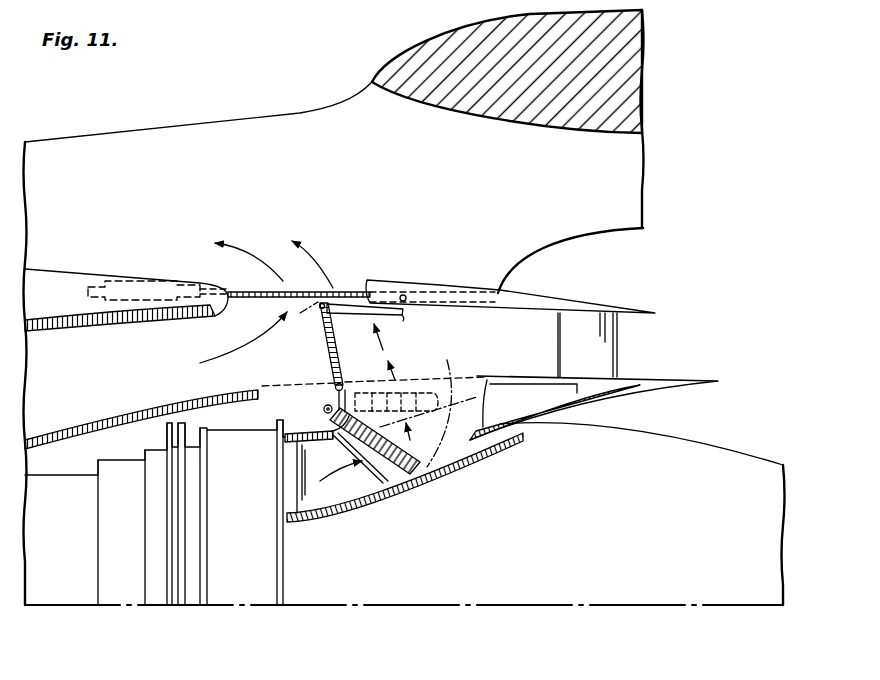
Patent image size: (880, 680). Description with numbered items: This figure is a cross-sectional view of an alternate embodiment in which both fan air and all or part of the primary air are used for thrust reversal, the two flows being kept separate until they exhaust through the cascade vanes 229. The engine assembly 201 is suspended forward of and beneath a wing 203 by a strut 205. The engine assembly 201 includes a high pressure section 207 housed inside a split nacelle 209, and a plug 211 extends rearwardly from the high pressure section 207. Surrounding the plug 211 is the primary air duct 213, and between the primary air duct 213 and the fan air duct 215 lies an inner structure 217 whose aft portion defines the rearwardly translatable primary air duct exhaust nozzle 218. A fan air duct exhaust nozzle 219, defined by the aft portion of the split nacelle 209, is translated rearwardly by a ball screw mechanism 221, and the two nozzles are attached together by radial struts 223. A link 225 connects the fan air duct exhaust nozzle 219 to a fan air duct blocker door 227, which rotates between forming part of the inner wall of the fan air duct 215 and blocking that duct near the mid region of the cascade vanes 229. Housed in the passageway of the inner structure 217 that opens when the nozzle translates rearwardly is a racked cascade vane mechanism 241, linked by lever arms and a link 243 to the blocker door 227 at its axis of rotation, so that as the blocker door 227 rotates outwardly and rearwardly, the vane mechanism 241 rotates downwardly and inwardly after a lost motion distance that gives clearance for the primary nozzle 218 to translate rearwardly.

The engine assembly 201 is at (567, 277).
The wing 203 is at (447, 48).
The strut 205 is at (226, 127).
The high pressure section 207 is at (192, 578).
The split nacelle 209 is at (83, 277).
The plug 211 is at (724, 455).
The primary air duct 213 is at (395, 502).
The fan air duct 215 is at (147, 381).
The inner structure 217 is at (258, 426).
The primary air duct exhaust nozzle 218 is at (553, 420).
The fan air duct exhaust nozzle 219 is at (450, 283).
The ball screw mechanism 221 is at (145, 283).
The radial struts 223 is at (607, 347).
The link 225 is at (398, 309).
The fan air duct blocker door 227 is at (317, 312).
The cascade vanes 229 is at (325, 293).
The racked cascade vane mechanism 241 is at (423, 368).
The link 243 is at (334, 408).